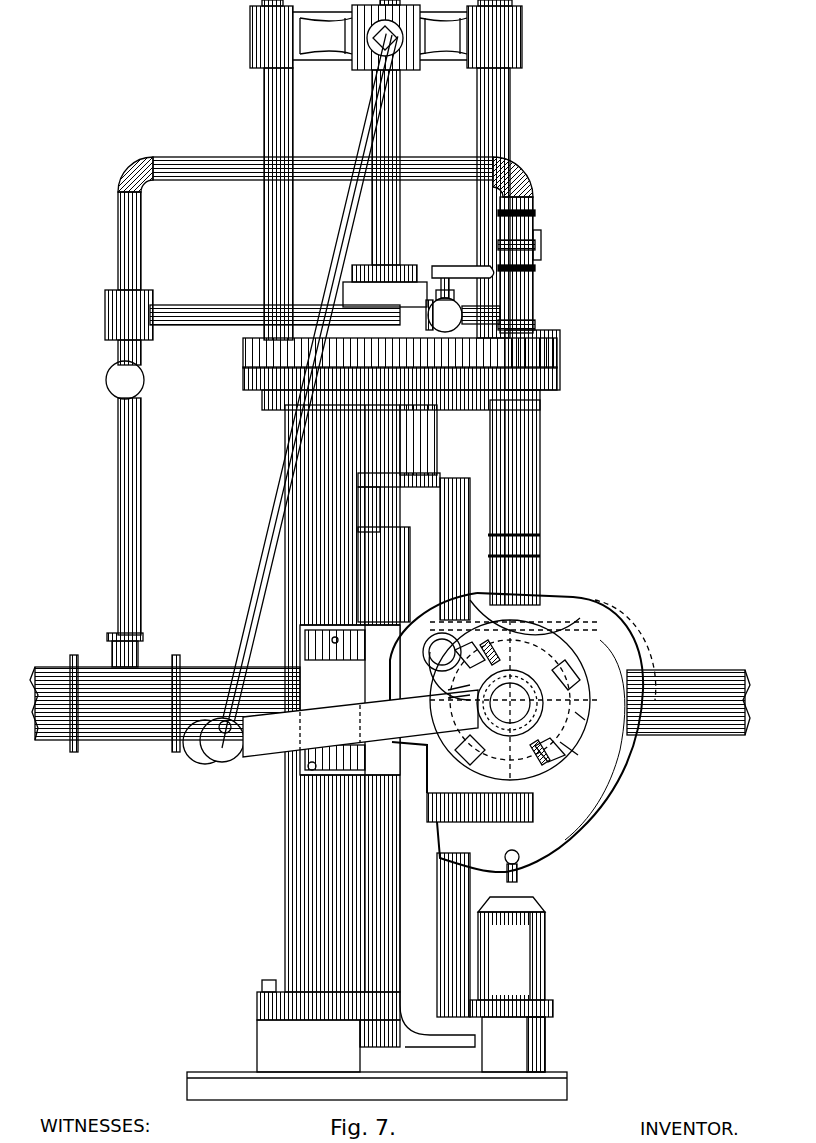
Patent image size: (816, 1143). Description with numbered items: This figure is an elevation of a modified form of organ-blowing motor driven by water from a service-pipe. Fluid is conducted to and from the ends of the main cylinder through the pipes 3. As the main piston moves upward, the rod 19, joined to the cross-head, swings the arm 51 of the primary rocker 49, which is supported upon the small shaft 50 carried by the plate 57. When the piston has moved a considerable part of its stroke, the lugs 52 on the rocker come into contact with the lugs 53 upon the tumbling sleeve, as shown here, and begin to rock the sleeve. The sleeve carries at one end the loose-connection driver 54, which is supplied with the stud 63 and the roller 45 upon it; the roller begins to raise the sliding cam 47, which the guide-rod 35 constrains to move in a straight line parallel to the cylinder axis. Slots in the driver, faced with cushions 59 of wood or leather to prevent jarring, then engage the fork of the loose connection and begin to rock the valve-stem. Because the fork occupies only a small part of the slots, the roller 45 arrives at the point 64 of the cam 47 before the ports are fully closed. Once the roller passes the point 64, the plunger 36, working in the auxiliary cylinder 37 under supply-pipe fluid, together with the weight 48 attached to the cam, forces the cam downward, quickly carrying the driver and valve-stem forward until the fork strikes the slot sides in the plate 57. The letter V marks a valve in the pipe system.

The pipes 3 is at (533, 542).
The rod 19 is at (248, 582).
The guide-rod 35 is at (372, 852).
The plunger 36 is at (533, 559).
The cylinder 37 is at (533, 494).
The roller 45 is at (449, 670).
The sliding cam 47 is at (572, 828).
The weight 48 is at (548, 958).
The primary rocker 49 is at (515, 700).
The shaft 50 is at (510, 703).
The arm 51 is at (566, 644).
The lugs 52 is at (517, 712).
The lugs 53 is at (512, 702).
The loose-connection driver 54 is at (505, 720).
The plate 57 is at (323, 703).
The cushions 59 is at (534, 702).
The stud 63 is at (442, 652).
The point 64 is at (515, 620).
The valve V is at (323, 412).